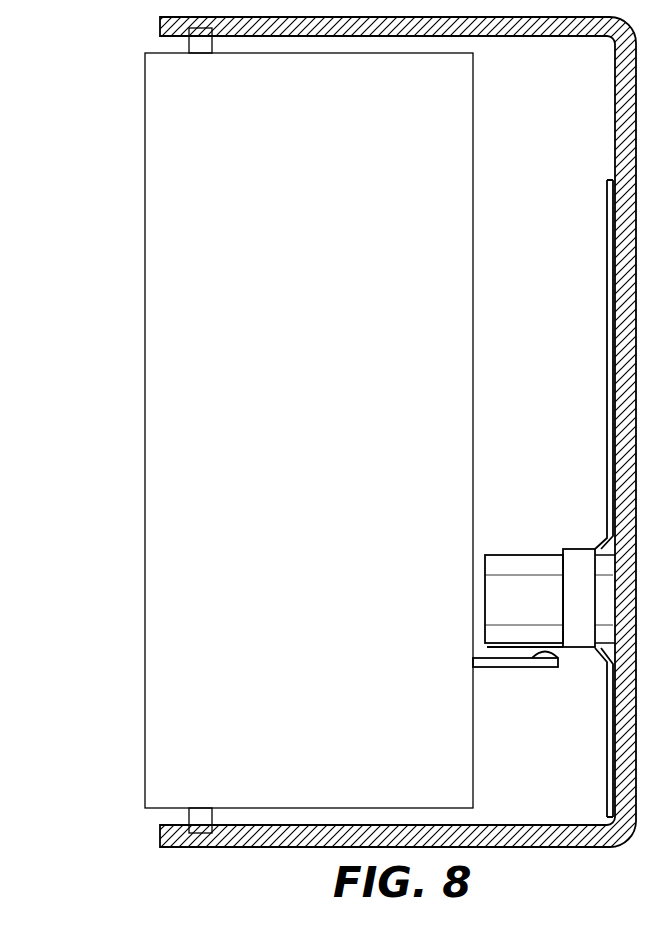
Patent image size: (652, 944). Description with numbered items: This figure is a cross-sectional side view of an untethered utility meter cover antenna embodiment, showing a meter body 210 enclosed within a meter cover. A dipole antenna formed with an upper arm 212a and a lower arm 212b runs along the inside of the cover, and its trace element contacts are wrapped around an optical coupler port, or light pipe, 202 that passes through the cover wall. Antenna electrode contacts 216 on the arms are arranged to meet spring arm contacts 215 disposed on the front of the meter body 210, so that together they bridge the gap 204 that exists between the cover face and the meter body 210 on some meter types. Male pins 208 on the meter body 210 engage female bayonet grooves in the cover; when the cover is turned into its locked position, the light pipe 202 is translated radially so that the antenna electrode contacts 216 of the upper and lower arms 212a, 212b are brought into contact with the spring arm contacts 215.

The optical coupler port (light pipe) 202 is at (530, 555).
The gap 204 is at (482, 555).
The male pins 208 is at (198, 44).
The meter body 210 is at (290, 427).
The upper arm 212a is at (607, 275).
The lower arm 212b is at (607, 775).
The spring arm contacts 215 is at (502, 668).
The antenna electrode contacts 216 is at (520, 648).